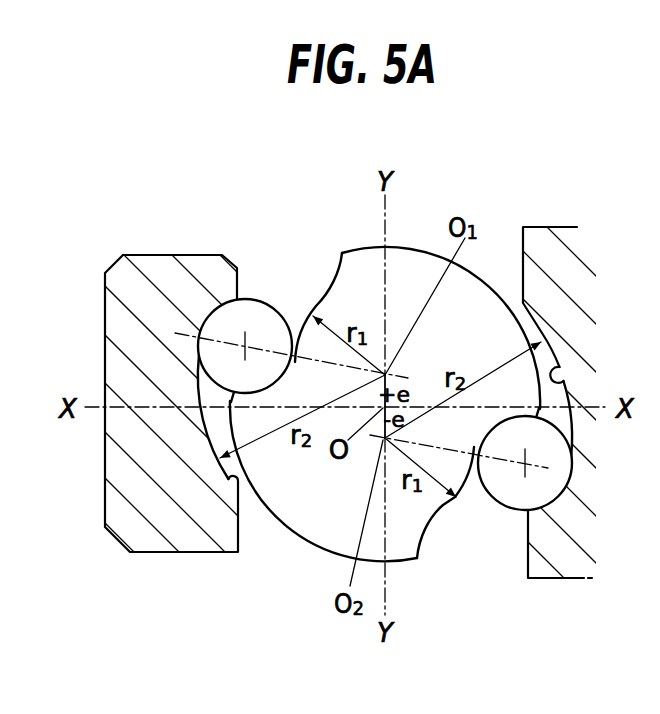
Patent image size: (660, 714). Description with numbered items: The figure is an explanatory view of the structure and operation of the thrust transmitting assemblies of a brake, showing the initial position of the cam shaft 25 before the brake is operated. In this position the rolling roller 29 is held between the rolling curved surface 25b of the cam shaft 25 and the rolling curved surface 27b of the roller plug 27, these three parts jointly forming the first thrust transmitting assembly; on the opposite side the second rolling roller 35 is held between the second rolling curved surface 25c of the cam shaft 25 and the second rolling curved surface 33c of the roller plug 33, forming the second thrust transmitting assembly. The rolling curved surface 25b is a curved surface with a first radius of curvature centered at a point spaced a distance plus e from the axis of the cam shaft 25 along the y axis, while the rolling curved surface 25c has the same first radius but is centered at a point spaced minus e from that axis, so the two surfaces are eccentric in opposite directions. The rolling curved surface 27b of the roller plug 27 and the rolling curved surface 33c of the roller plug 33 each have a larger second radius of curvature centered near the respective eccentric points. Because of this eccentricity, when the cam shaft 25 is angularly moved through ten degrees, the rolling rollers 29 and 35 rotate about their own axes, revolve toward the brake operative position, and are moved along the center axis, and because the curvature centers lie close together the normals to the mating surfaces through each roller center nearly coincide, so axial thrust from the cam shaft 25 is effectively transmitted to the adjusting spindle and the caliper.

The cam shaft 25 is at (295, 495).
The rolling curved surface 25b is at (299, 325).
The second rolling curved surface 25c is at (461, 498).
The roller plug 27 is at (135, 287).
The rolling curved surface 27b is at (240, 492).
The rolling roller 29 is at (242, 313).
The roller plug 33 is at (545, 253).
The second rolling curved surface 33c is at (556, 367).
The second rolling roller 35 is at (520, 490).